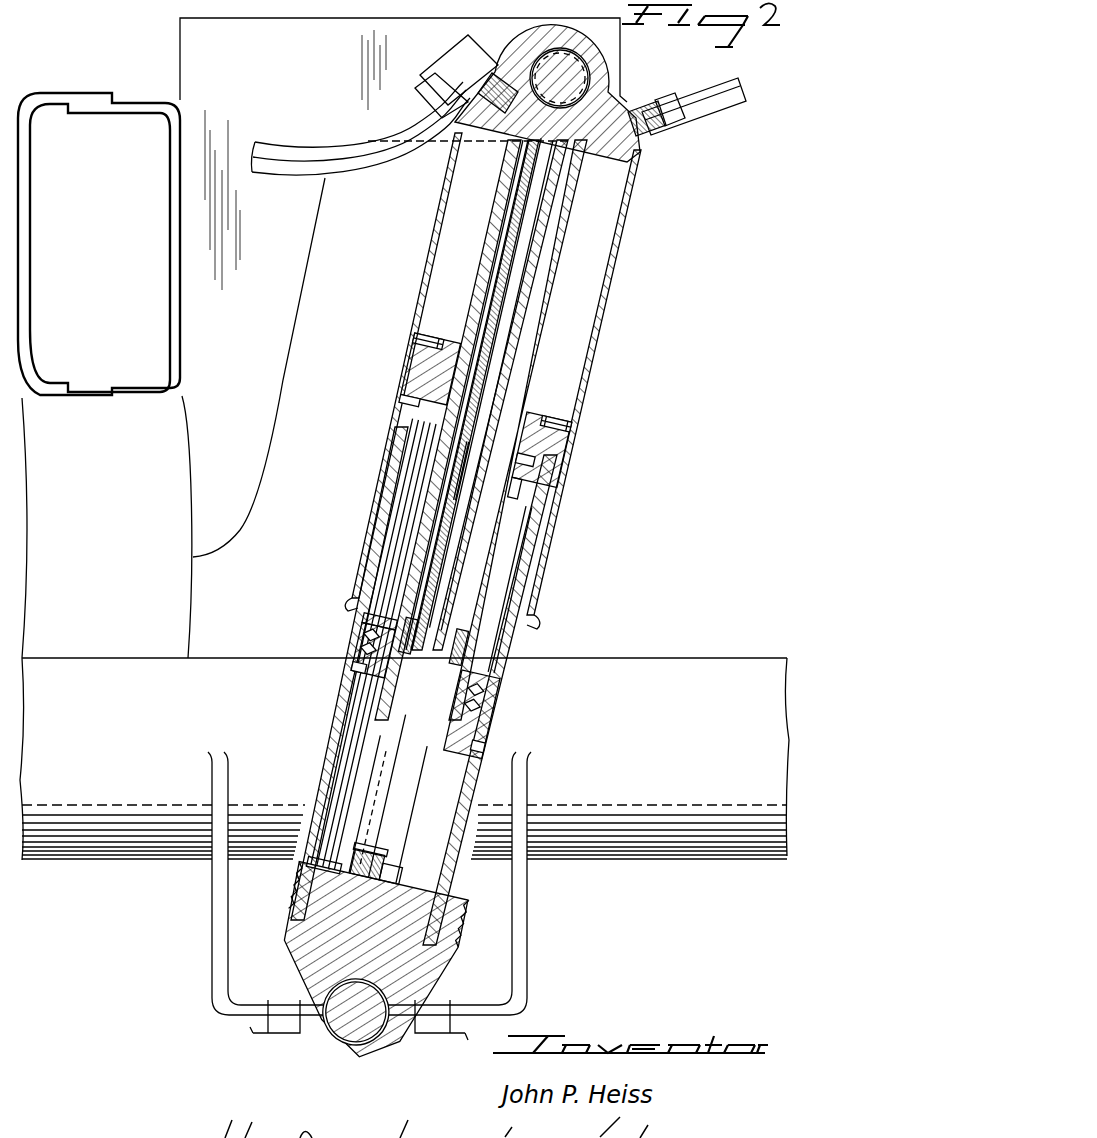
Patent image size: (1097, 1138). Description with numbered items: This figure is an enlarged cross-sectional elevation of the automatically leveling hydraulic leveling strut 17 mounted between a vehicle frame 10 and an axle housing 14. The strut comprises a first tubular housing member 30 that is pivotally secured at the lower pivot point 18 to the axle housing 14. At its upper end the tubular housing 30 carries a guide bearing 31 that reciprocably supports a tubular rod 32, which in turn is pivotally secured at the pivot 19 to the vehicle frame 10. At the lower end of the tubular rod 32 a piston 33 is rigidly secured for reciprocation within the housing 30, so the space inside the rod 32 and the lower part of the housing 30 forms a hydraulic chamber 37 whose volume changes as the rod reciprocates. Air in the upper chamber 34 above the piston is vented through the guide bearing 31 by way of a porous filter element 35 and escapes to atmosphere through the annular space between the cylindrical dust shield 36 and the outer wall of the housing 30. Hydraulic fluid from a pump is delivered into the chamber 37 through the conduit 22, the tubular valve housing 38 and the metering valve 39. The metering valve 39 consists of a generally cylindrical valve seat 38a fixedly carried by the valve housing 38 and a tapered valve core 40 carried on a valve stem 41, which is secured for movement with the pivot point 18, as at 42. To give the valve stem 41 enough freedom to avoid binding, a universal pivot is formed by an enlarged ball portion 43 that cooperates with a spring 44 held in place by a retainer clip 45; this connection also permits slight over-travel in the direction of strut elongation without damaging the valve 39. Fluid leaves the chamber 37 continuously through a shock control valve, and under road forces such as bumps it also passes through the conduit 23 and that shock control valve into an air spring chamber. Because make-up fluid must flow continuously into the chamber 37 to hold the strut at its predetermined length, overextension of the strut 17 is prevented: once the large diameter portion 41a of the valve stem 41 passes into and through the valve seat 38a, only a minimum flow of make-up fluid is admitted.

The vehicle frame 10 is at (222, 60).
The axle housing 14 is at (212, 876).
The hydraulic leveling strut 17 is at (398, 365).
The pivot point 18 is at (322, 1040).
The pivot 19 is at (548, 68).
The conduit 22 is at (360, 170).
The conduit 23 is at (680, 110).
The tubular housing member 30 is at (330, 752).
The guide bearing 31 is at (418, 400).
The tubular rod 32 is at (470, 322).
The piston 33 is at (345, 690).
The upper chamber 34 is at (380, 522).
The porous filter element 35 is at (572, 415).
The cylindrical dust shield 36 is at (548, 462).
The chamber 37 is at (470, 745).
The tubular valve housing 38 is at (520, 300).
The cylindrical valve seat 38a is at (425, 650).
The metering valve 39 is at (520, 645).
The tapered valve core 40 is at (440, 622).
The valve stem 41 is at (410, 780).
The large diameter portion 41a is at (470, 470).
The securement point 42 is at (362, 905).
The enlarged ball portion 43 is at (385, 920).
The spring 44 is at (395, 915).
The retainer clip 45 is at (395, 910).